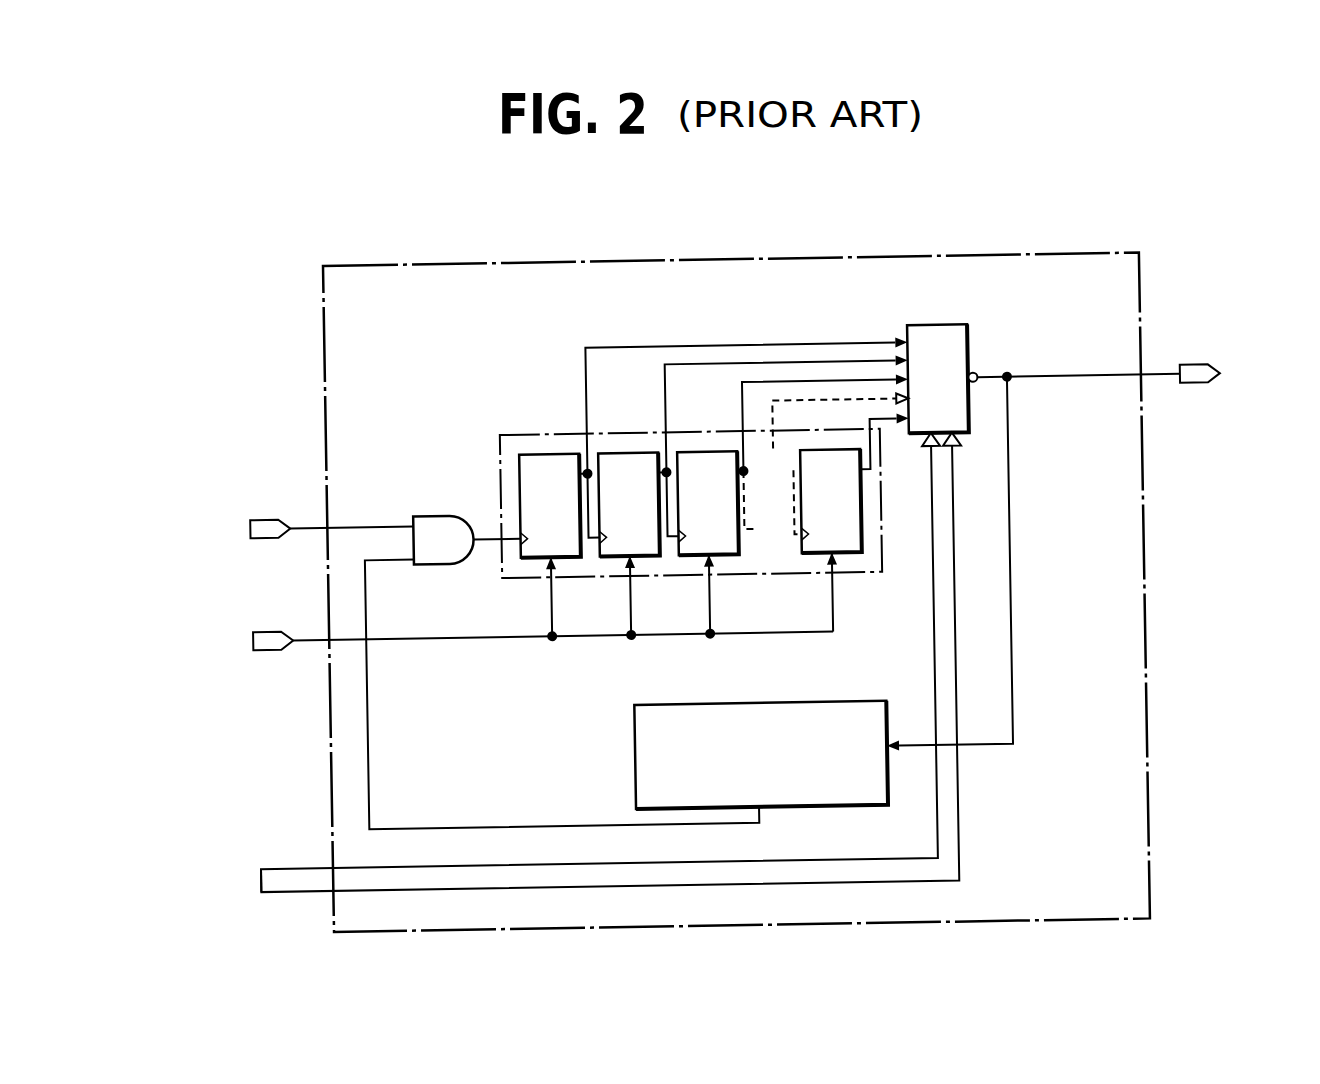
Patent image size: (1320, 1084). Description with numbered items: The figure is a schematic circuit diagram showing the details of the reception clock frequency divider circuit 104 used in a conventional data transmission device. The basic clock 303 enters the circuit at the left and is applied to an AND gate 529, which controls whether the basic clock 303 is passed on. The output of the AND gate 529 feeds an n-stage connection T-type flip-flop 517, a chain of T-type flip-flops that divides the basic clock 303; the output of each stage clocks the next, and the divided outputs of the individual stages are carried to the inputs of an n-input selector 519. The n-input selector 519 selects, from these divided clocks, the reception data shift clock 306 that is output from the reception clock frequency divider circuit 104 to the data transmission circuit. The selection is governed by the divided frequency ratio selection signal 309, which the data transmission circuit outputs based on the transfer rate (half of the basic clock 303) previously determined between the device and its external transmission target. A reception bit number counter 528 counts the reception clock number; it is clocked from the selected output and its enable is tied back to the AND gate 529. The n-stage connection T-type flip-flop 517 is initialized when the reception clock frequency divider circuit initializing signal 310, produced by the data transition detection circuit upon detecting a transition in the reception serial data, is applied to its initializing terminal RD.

The reception clock frequency divider circuit 104 is at (818, 266).
The n-stage connection T-type flip-flop 517 is at (528, 437).
The n-input selector 519 is at (949, 336).
The AND gate 529 is at (429, 519).
The reception bit number counter 528 is at (756, 711).
The basic clock 303 is at (300, 530).
The reception clock frequency divider circuit initializing signal 310 is at (514, 639).
The divided frequency ratio selection signal 309 is at (226, 887).
The reception data shift clock 306 is at (1231, 374).